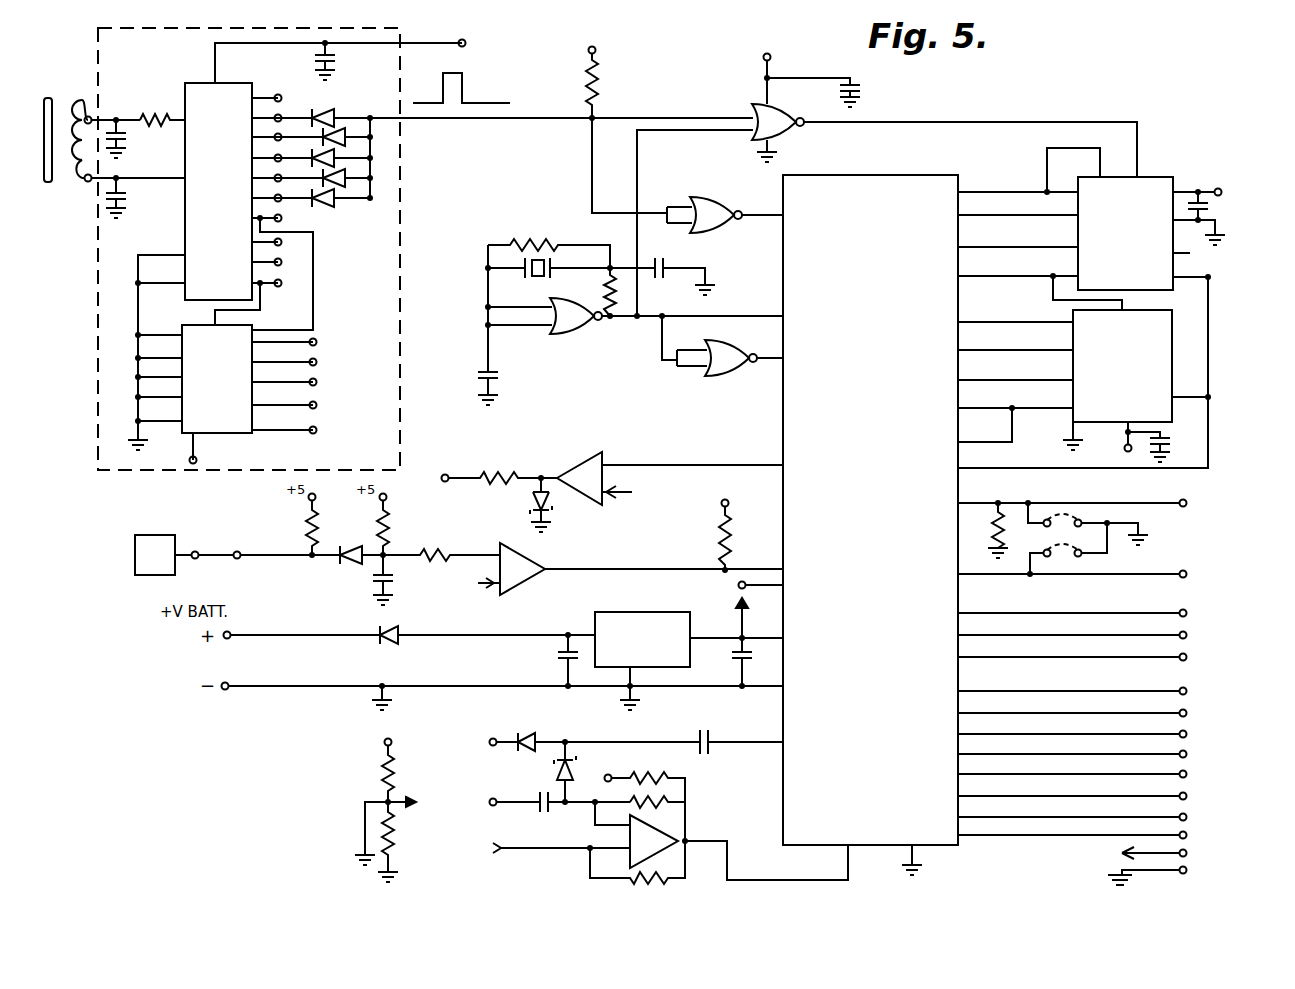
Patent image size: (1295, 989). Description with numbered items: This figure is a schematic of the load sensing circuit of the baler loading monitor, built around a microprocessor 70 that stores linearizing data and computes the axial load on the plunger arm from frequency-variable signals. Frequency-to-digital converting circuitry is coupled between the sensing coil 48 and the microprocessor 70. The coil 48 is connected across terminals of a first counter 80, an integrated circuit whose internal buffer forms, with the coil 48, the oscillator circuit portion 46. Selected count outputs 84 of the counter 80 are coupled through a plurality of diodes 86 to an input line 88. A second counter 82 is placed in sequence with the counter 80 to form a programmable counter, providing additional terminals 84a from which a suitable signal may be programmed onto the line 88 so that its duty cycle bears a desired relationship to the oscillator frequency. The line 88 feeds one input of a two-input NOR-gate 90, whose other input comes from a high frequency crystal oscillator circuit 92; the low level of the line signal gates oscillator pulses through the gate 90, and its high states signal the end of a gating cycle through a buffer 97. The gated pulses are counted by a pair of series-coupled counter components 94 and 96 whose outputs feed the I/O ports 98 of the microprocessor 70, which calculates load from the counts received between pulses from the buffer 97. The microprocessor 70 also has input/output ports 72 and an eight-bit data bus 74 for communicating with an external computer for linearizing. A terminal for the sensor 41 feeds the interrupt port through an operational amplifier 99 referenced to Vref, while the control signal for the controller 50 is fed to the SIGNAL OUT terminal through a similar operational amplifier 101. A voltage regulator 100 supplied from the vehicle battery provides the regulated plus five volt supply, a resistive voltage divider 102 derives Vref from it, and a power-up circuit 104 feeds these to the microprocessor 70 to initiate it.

The sensor 41 is at (237, 555).
The oscillator circuit portion 46 is at (400, 232).
The coil 48 is at (78, 104).
The controller 50 is at (50, 182).
The microprocessor 70 is at (785, 400).
The input/output ports 72 is at (1213, 500).
The 8-bit data bus 74 is at (1192, 684).
The first counter 80 is at (190, 82).
The second counter 82 is at (243, 433).
The count outputs 84 is at (297, 100).
The additional terminals 84a is at (328, 336).
The diodes 86 is at (340, 104).
The input line 88 is at (548, 117).
The NOR-gate 90 is at (752, 104).
The high frequency crystal oscillator circuit 92 is at (543, 218).
The integrated circuit counter component 94 is at (1166, 177).
The integrated circuit counter component 96 is at (1172, 338).
The buffer 97 is at (712, 196).
The I/O ports 98 is at (1016, 168).
The operational amplifier 99 is at (505, 545).
The voltage regulator 100 is at (600, 612).
The operational amplifier 101 is at (568, 462).
The resistive voltage divider 102 is at (363, 794).
The power-up circuit 104 is at (616, 726).